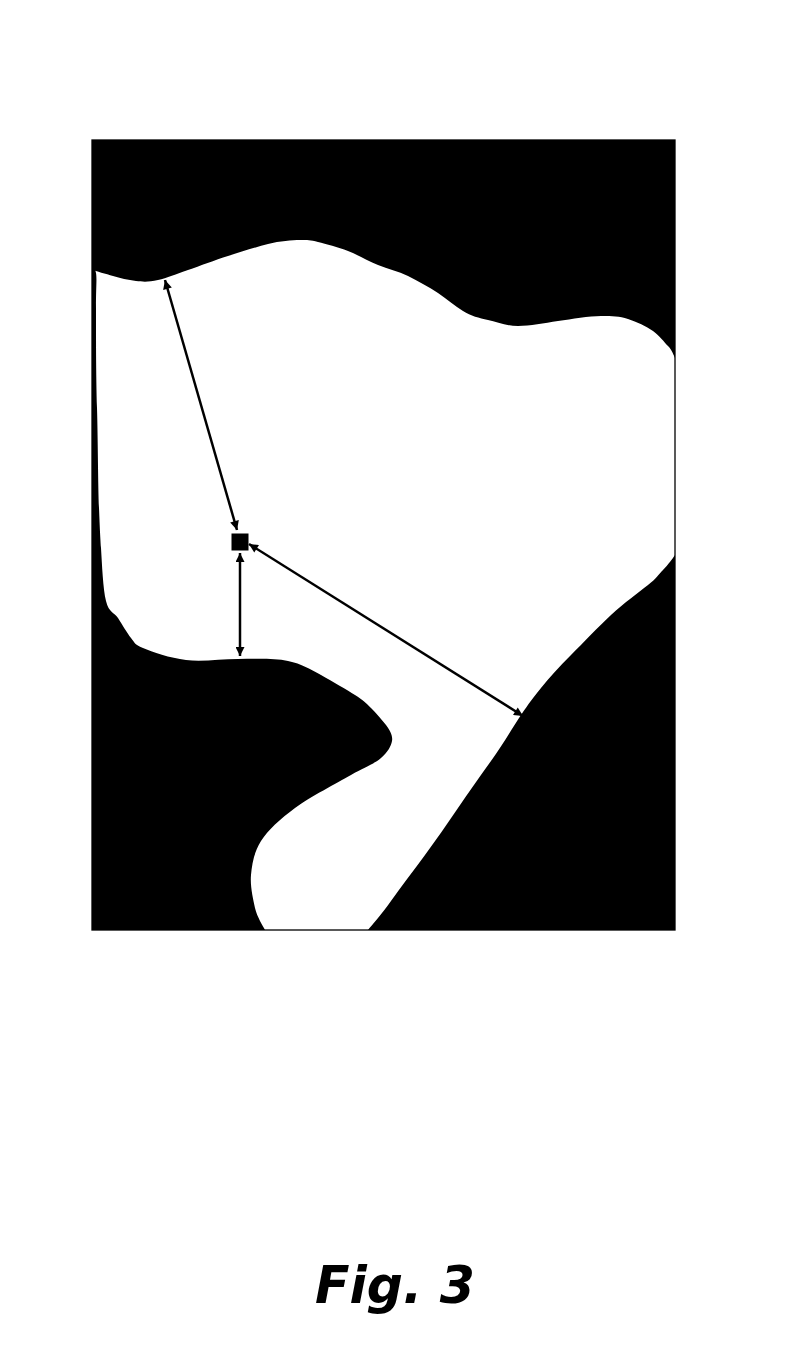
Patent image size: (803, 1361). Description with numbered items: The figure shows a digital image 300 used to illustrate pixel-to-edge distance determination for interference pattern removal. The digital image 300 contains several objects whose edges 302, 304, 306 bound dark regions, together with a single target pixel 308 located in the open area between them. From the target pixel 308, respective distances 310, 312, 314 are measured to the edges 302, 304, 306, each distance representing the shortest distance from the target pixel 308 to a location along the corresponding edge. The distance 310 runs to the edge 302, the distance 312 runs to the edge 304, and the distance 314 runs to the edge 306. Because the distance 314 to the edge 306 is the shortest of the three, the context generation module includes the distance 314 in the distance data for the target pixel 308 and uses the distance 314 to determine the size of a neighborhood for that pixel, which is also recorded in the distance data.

The digital image 300 is at (137, 80).
The edge 302 is at (452, 303).
The edge 304 is at (642, 578).
The edge 306 is at (268, 817).
The target pixel 308 is at (241, 524).
The distance 310 is at (200, 435).
The distance 312 is at (392, 627).
The distance 314 is at (227, 597).